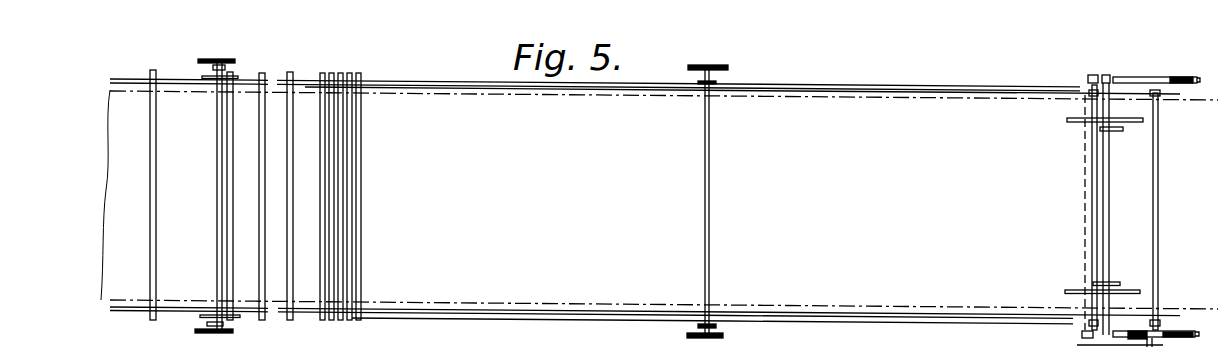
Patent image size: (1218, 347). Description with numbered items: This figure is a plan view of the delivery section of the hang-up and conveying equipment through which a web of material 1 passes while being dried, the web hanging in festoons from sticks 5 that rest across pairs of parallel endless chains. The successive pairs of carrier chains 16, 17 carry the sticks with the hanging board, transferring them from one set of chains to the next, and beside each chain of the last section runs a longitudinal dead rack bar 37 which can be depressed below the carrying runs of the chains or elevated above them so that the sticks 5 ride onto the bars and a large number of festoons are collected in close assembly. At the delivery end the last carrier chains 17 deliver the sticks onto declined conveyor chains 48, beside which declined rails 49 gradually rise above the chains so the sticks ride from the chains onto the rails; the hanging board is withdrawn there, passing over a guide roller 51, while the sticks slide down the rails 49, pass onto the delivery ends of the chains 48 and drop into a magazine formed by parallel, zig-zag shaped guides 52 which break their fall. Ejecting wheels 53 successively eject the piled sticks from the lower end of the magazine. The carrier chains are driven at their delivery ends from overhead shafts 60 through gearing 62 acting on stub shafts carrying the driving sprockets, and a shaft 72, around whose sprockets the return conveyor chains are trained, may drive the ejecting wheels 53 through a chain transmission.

The web of material 1 is at (485, 303).
The sticks 5 is at (153, 243).
The carrier chains 16 is at (143, 312).
The carrier chains 17 is at (657, 84).
The dead rack bars 37 is at (619, 89).
The declined conveyor chains 48 is at (892, 93).
The declined rails 49 is at (984, 88).
The guide roller 51 is at (1083, 230).
The magazine guides 52 is at (1075, 122).
The ejecting wheels 53 is at (1110, 131).
The overhead shafts 60 is at (218, 197).
The gearing 62 is at (223, 59).
The shaft 72 is at (1158, 215).